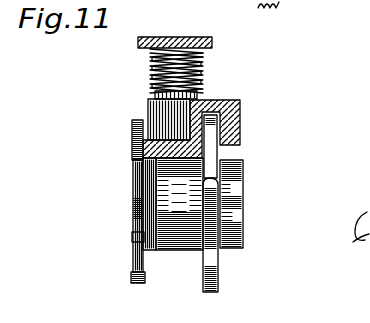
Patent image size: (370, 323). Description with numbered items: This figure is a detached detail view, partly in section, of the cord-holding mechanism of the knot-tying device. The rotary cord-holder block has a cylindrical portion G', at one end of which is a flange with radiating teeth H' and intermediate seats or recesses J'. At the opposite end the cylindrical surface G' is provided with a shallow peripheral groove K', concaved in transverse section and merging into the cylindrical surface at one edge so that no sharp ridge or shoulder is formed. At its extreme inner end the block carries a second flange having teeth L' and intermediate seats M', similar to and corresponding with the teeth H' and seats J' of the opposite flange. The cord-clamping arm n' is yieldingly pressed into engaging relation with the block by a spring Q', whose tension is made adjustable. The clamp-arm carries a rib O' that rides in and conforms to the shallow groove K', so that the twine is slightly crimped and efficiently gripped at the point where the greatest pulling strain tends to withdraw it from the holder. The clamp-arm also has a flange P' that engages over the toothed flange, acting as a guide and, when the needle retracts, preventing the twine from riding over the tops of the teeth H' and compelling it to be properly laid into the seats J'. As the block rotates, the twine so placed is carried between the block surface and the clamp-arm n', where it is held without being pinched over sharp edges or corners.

The spring Q' is at (190, 65).
The cord-clamping arm n' is at (148, 115).
The flange P' is at (207, 125).
The rib O' is at (122, 140).
The teeth L' is at (121, 219).
The shallow peripheral groove K' is at (151, 234).
The seats M' is at (118, 244).
The cylindrical portion G' is at (179, 221).
The radiating teeth H' is at (265, 204).
The seats J' is at (241, 203).